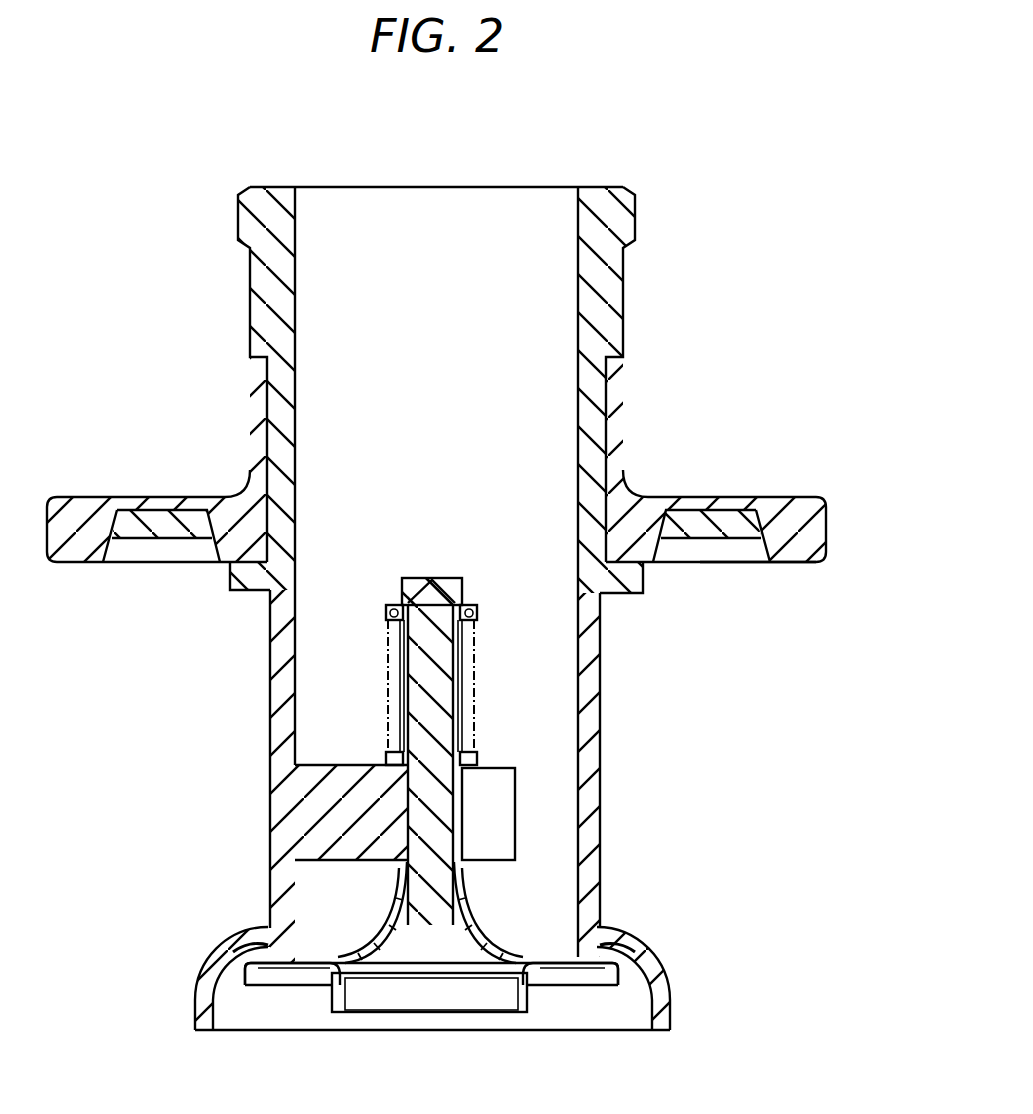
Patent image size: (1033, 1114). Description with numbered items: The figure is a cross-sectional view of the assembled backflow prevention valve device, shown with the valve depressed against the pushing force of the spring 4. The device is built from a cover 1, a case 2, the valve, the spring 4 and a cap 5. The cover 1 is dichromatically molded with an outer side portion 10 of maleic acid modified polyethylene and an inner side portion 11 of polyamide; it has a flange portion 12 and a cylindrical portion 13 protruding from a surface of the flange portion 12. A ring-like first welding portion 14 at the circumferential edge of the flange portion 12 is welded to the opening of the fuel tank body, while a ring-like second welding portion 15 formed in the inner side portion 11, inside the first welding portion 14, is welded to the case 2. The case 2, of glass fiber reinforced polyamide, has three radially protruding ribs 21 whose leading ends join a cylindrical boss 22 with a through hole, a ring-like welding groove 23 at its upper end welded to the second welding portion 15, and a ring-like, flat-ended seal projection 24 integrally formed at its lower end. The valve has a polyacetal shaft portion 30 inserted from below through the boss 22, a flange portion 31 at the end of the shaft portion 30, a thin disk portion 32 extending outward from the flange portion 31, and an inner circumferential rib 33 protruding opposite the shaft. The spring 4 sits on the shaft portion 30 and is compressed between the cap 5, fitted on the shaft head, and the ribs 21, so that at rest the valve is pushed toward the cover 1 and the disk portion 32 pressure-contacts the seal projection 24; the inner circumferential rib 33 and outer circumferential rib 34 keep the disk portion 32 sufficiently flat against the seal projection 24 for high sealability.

The cover 1 is at (652, 271).
The case 2 is at (466, 776).
The spring 4 is at (385, 665).
The cap 5 is at (464, 606).
The outer side portion 10 is at (80, 507).
The inner side portion 11 is at (296, 262).
The flange portion 12 is at (716, 459).
The cylindrical portion 13 is at (624, 336).
The first welding portion 14 is at (790, 565).
The second welding portion 15 is at (262, 549).
The rib 21 is at (337, 777).
The boss 22 is at (466, 808).
The welding groove 23 is at (663, 512).
The seal projection 24 is at (464, 934).
The shaft portion 30 is at (469, 737).
The flange portion 31 is at (483, 941).
The disk portion 32 is at (552, 963).
The inner circumferential rib 33 is at (340, 990).
The outer circumferential rib 34 is at (265, 987).